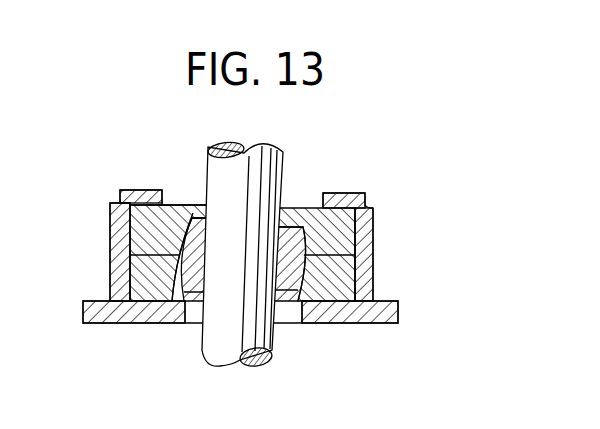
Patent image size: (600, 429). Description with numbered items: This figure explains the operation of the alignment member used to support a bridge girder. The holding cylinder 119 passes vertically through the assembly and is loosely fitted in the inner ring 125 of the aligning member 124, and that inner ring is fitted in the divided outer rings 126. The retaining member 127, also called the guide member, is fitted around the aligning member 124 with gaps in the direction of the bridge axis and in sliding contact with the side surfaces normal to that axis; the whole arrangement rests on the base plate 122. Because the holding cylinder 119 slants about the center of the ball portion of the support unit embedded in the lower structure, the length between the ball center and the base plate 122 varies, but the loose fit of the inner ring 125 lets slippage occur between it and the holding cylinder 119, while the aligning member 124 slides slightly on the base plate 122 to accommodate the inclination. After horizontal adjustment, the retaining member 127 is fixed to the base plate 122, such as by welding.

The holding cylinder 119 is at (267, 165).
The base plate 122 is at (374, 315).
The aligning member 124 is at (320, 288).
The inner ring 125 is at (172, 301).
The outer ring 126 is at (342, 225).
The retaining member 127 is at (365, 262).